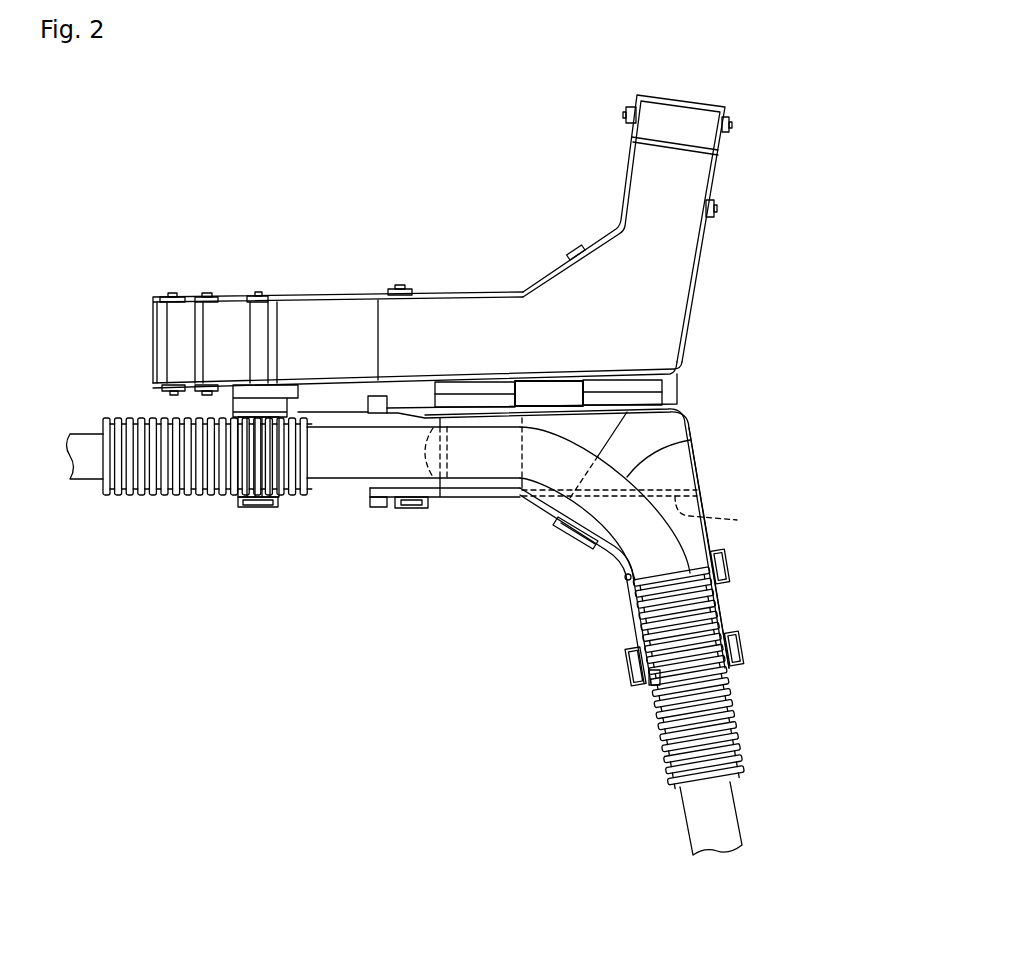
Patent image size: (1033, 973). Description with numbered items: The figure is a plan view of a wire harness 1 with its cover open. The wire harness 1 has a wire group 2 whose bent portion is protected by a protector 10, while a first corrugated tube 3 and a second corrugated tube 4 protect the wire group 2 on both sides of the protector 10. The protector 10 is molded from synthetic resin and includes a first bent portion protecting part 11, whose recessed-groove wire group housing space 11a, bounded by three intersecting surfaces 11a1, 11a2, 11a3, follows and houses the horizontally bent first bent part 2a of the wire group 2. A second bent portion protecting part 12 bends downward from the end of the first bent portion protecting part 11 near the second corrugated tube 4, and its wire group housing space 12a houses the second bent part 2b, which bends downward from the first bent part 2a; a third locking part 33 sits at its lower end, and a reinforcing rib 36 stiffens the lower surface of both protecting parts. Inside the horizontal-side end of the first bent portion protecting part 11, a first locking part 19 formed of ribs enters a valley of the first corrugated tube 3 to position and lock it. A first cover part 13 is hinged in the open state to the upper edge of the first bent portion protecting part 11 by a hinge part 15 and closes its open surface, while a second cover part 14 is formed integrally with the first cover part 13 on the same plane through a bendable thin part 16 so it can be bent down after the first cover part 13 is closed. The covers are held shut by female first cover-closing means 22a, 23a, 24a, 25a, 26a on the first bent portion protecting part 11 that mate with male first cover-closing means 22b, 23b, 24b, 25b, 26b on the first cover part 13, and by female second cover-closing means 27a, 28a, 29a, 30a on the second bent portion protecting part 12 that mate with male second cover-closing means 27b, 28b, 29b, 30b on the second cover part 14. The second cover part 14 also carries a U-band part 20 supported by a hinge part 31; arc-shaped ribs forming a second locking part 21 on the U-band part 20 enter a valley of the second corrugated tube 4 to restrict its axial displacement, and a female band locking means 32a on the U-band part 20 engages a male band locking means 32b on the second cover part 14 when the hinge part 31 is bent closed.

The wire harness 1 is at (331, 152).
The wire group 2 is at (528, 497).
The first bent part 2a is at (690, 443).
The second bent part 2b is at (340, 480).
The first corrugated tube 3 is at (738, 735).
The second corrugated tube 4 is at (150, 497).
The protector 10 is at (705, 494).
The first bent portion protecting part 11 is at (502, 430).
The wire group housing space 11a is at (680, 477).
The intersecting surface 11a1 is at (703, 540).
The intersecting surface 11a2 is at (712, 606).
The intersecting surface 11a3 is at (622, 585).
The second bent portion protecting part 12 is at (440, 498).
The wire group housing space 12a is at (372, 506).
The first cover part 13 is at (660, 293).
The second cover part 14 is at (318, 318).
The hinge part 15 is at (483, 403).
The thin part 16 is at (380, 333).
The first locking part 19 is at (652, 685).
The U-band part 20 is at (236, 495).
The second locking part 21 is at (265, 529).
The female first cover-closing means 22a is at (748, 648).
The male first cover-closing means 22b is at (733, 124).
The female first cover-closing means 23a is at (730, 562).
The male first cover-closing means 23b is at (718, 212).
The female first cover-closing means 24a is at (627, 668).
The male first cover-closing means 24b is at (626, 113).
The female first cover-closing means 25a is at (575, 540).
The male first cover-closing means 25b is at (578, 251).
The female first cover-closing means 26a is at (408, 509).
The male first cover-closing means 26b is at (400, 286).
The female second cover-closing means 27a is at (387, 554).
The male second cover-closing means 27b is at (172, 293).
The female second cover-closing means 28a is at (378, 508).
The male second cover-closing means 28b is at (207, 293).
The female second cover-closing means 29a is at (371, 302).
The male second cover-closing means 29b is at (173, 393).
The female second cover-closing means 30a is at (377, 398).
The male second cover-closing means 30b is at (206, 396).
The hinge part 31 is at (290, 409).
The female band locking means 32a is at (266, 508).
The male band locking means 32b is at (260, 292).
The third locking part 33 is at (425, 430).
The reinforcing rib 36 is at (722, 515).